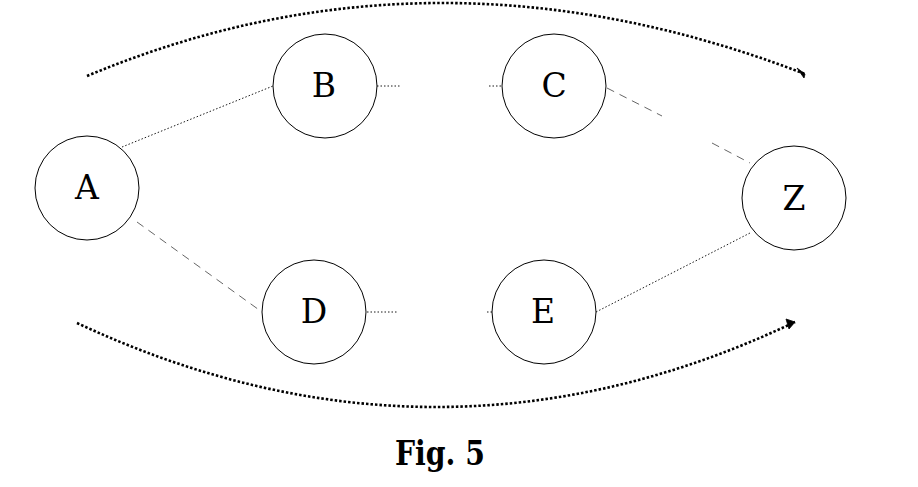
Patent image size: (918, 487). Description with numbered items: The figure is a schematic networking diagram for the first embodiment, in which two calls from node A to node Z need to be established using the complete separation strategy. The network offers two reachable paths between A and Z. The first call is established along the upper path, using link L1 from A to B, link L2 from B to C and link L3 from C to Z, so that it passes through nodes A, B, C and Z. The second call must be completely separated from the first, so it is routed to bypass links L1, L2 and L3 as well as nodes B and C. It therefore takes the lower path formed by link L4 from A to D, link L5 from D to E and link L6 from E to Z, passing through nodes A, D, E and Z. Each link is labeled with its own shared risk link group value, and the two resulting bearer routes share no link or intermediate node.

The link L1 is at (197, 116).
The link L2 is at (439, 88).
The link L3 is at (678, 125).
The link L4 is at (199, 267).
The link L5 is at (429, 311).
The link L6 is at (673, 272).